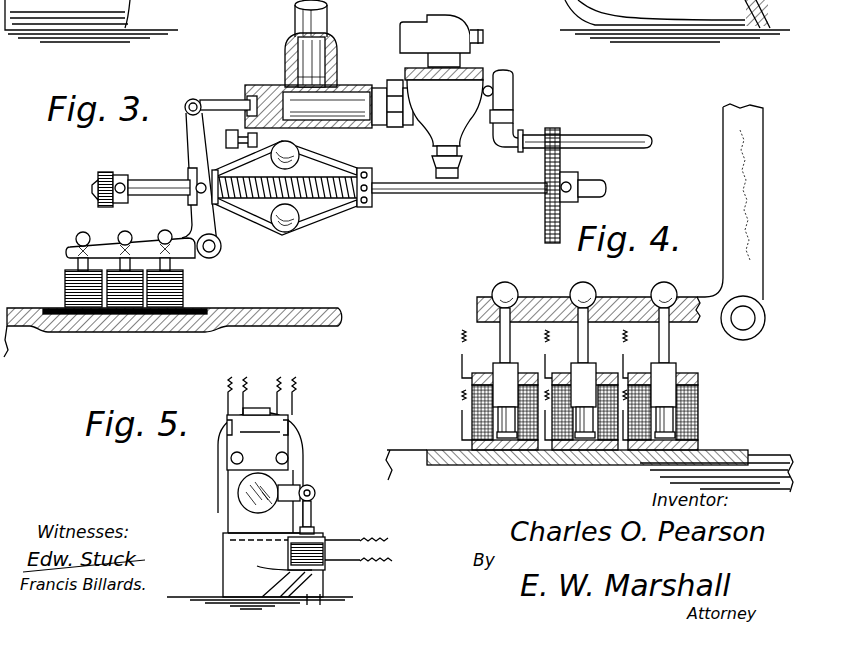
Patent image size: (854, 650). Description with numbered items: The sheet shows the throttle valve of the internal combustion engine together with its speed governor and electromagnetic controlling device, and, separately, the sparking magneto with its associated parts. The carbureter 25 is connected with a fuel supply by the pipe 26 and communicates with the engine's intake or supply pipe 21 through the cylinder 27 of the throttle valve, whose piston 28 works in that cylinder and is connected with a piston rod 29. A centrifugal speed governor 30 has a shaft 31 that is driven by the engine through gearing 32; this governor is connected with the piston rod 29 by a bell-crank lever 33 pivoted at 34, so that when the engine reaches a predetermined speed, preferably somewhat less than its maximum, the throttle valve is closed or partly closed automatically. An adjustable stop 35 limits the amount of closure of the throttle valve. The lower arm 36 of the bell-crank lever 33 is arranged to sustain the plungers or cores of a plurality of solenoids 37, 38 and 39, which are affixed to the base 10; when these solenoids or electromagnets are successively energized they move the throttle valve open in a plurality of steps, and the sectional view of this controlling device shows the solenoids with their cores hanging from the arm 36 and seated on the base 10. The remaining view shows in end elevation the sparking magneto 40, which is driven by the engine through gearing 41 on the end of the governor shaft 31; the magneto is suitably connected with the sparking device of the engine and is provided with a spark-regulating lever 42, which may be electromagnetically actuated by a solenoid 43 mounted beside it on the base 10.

In FIG. 3, the base 10 is at (306, 316).
In FIG. 4, the base 10 is at (752, 463).
In FIG. 5, the base 10 is at (203, 600).
In FIG. 3, the intake or supply pipe 21 is at (322, 23).
In FIG. 3, the carbureter 25 is at (430, 127).
In FIG. 3, the pipe 26 is at (607, 140).
In FIG. 3, the cylinder 27 is at (345, 100).
In FIG. 3, the piston 28 is at (287, 88).
In FIG. 3, the piston rod 29 is at (206, 90).
In FIG. 3, the centrifugal speed governor 30 is at (327, 210).
In FIG. 3, the shaft 31 is at (478, 190).
In FIG. 3, the gearing 32 is at (547, 220).
In FIG. 3, the bell-crank lever 33 is at (190, 165).
In FIG. 4, the bell-crank lever 33 is at (733, 198).
In FIG. 3, the pivot 34 is at (219, 254).
In FIG. 4, the pivot 34 is at (745, 322).
In FIG. 3, the adjustable stop 35 is at (232, 148).
In FIG. 3, the lower arm 36 is at (103, 247).
In FIG. 4, the lower arm 36 is at (477, 318).
In FIG. 3, the solenoid 37 is at (90, 283).
In FIG. 4, the solenoid 37 is at (480, 423).
In FIG. 3, the solenoid 38 is at (137, 288).
In FIG. 4, the solenoid 38 is at (561, 440).
In FIG. 3, the solenoid 39 is at (183, 288).
In FIG. 4, the solenoid 39 is at (692, 415).
In FIG. 5, the sparking magneto 40 is at (304, 441).
In FIG. 3, the gearing 41 is at (100, 175).
In FIG. 5, the spark-regulating lever 42 is at (297, 488).
In FIG. 5, the solenoid 43 is at (317, 553).